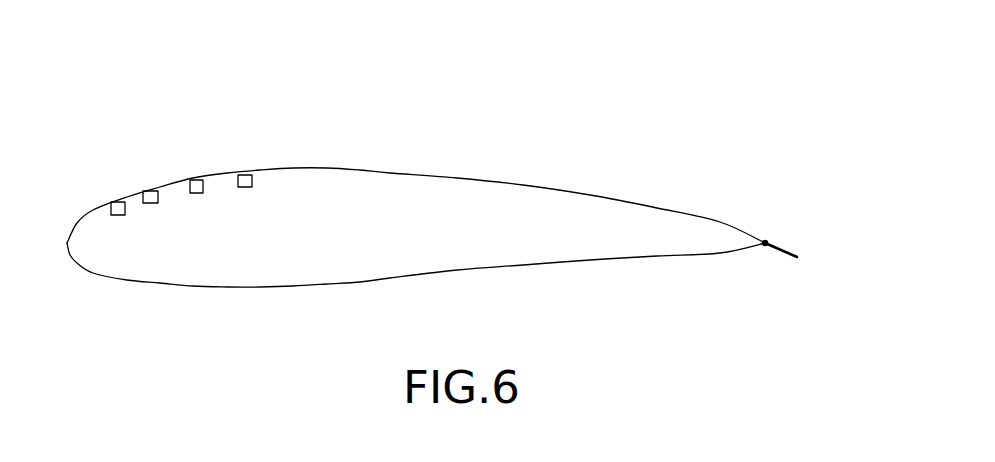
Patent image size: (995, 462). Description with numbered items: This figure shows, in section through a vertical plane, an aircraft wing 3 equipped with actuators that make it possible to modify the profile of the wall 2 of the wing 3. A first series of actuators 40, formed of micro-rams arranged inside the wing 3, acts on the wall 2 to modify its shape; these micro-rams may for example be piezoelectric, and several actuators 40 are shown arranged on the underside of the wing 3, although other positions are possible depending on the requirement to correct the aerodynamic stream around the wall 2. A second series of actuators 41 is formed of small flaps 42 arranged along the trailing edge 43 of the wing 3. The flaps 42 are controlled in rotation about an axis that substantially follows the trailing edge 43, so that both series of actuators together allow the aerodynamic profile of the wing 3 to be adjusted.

The wall 2 is at (363, 170).
The wing 3 is at (712, 125).
The actuators 40 is at (237, 180).
The second series of actuators 41 is at (795, 248).
The flaps 42 is at (772, 258).
The trailing edge 43 is at (765, 240).